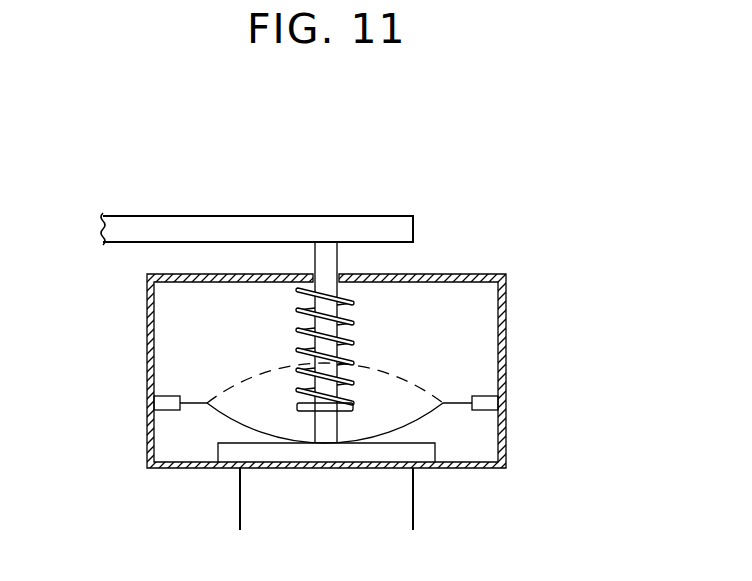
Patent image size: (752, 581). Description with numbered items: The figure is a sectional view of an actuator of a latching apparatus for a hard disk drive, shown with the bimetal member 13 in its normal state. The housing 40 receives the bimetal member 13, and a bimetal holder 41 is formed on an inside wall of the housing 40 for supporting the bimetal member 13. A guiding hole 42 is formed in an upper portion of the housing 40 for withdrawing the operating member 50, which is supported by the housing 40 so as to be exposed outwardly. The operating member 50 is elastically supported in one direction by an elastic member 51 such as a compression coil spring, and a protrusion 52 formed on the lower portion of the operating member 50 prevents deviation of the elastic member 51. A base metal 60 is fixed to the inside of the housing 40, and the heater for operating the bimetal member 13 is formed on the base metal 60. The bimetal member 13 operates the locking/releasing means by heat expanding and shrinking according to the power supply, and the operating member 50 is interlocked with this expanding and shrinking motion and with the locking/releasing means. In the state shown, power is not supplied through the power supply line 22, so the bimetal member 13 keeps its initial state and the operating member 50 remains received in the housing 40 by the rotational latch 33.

The bimetal member 13 is at (433, 410).
The power supply line 22 is at (237, 498).
The rotational latch 33 is at (228, 225).
The housing 40 is at (147, 328).
The bimetal holder 41 is at (168, 398).
The guiding hole 42 is at (313, 280).
The operating member 50 is at (334, 257).
The elastic member 51 is at (343, 320).
The protrusion 52 is at (355, 405).
The base metal 60 is at (427, 453).